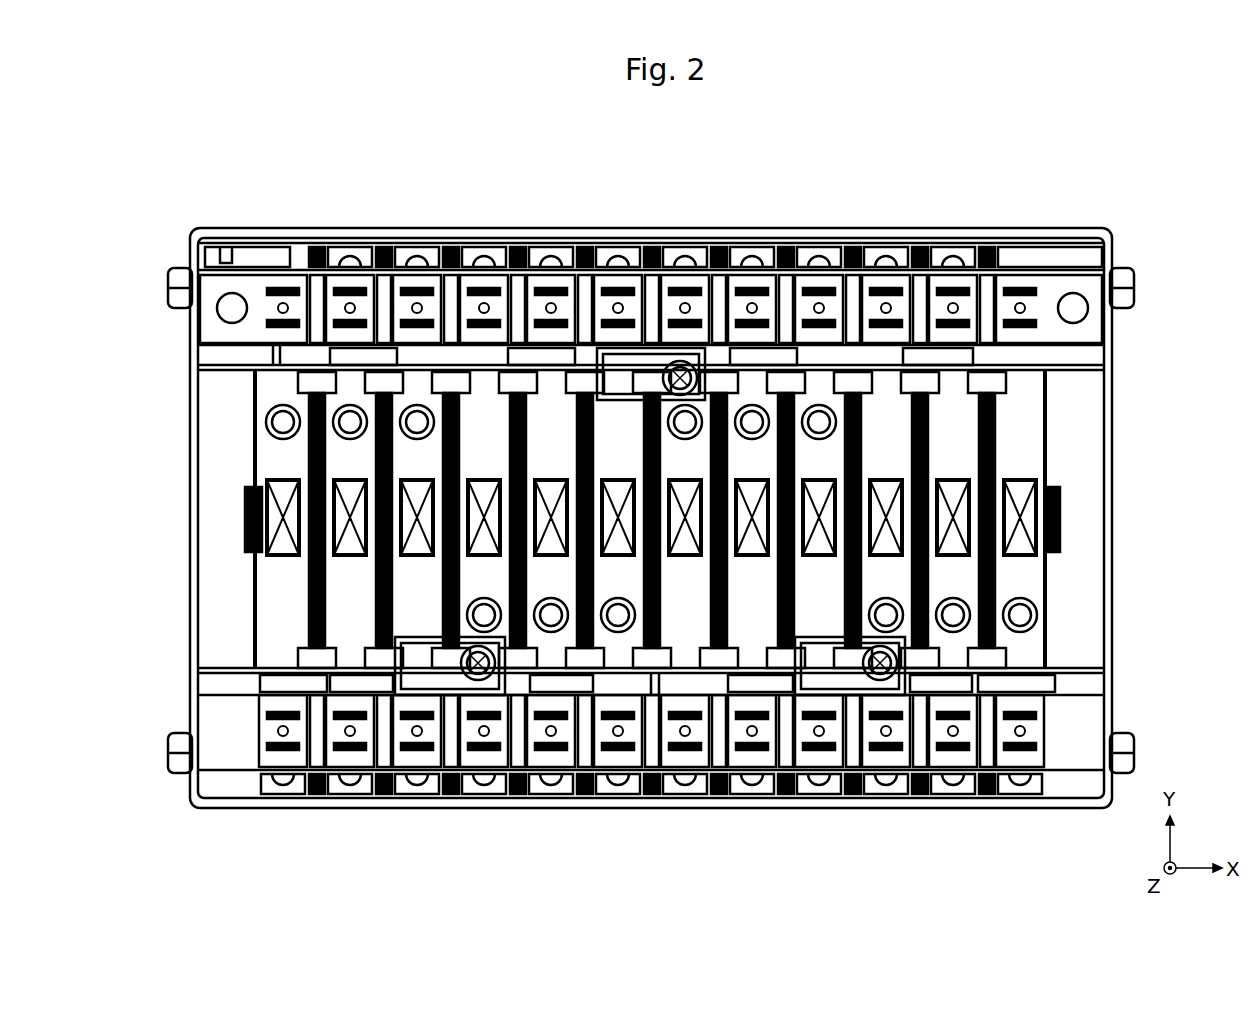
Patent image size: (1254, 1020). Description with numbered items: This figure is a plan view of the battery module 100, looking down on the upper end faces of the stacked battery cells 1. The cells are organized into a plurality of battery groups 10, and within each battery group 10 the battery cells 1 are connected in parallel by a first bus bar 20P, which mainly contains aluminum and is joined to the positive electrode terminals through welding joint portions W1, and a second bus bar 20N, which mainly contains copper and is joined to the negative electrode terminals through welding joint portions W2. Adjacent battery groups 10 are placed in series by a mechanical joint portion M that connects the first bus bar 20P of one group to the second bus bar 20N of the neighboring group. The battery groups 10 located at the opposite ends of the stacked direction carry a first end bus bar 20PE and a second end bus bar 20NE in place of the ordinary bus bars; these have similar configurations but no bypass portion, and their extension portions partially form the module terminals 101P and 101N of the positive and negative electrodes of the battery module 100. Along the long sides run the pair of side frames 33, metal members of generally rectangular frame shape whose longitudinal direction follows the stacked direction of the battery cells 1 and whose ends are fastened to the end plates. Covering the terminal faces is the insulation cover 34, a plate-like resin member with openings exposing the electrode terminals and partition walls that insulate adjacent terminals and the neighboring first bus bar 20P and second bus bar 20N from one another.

The battery module 100 is at (1058, 183).
The battery cell 1 is at (422, 606).
The battery group 10 is at (662, 523).
The first bus bar 20P is at (552, 282).
The second bus bar 20N is at (753, 282).
The second end bus bar 20NE is at (291, 282).
The first end bus bar 20PE is at (969, 282).
The module terminal 101N is at (213, 282).
The module terminal 101P is at (1082, 286).
The welding joint portion W1 is at (484, 300).
The welding joint portion W2 is at (350, 300).
The mechanical joint portion M is at (655, 375).
The side frame 33 is at (700, 232).
The insulation cover 34 is at (186, 330).